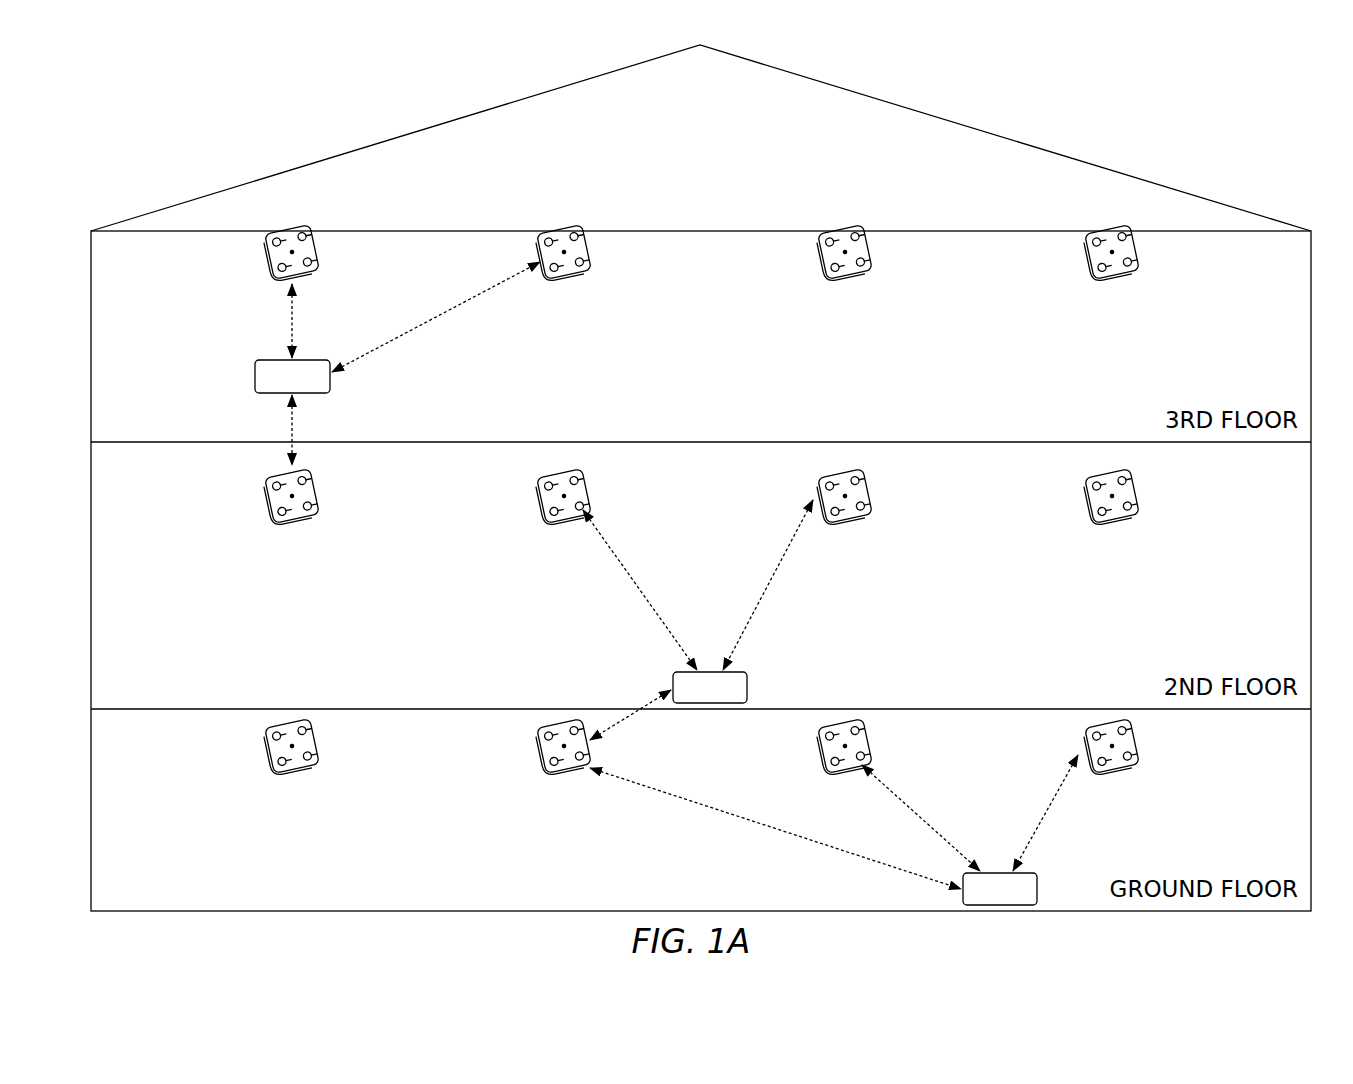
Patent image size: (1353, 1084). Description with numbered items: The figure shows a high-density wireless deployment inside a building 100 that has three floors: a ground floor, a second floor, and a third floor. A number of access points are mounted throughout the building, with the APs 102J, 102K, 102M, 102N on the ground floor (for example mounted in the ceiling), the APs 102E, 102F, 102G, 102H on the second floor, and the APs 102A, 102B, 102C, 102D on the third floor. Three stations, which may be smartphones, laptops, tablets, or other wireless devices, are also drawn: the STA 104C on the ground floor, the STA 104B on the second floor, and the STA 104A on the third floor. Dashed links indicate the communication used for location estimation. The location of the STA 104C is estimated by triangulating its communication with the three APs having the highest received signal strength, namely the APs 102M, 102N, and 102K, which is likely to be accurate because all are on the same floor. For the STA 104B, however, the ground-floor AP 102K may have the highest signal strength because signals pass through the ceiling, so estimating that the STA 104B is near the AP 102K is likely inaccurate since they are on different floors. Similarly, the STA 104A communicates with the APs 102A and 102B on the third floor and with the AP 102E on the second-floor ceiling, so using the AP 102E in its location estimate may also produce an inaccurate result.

The building 100 is at (1015, 137).
The AP 102A is at (291, 239).
The AP 102B is at (563, 239).
The AP 102C is at (844, 239).
The AP 102D is at (1111, 239).
The AP 102E is at (291, 512).
The AP 102F is at (563, 512).
The AP 102G is at (845, 512).
The AP 102H is at (1111, 512).
The AP 102J is at (291, 763).
The AP 102K is at (563, 763).
The AP 102M is at (845, 763).
The AP 102N is at (1111, 763).
The STA 104A is at (292, 376).
The STA 104B is at (710, 687).
The STA 104C is at (1000, 889).